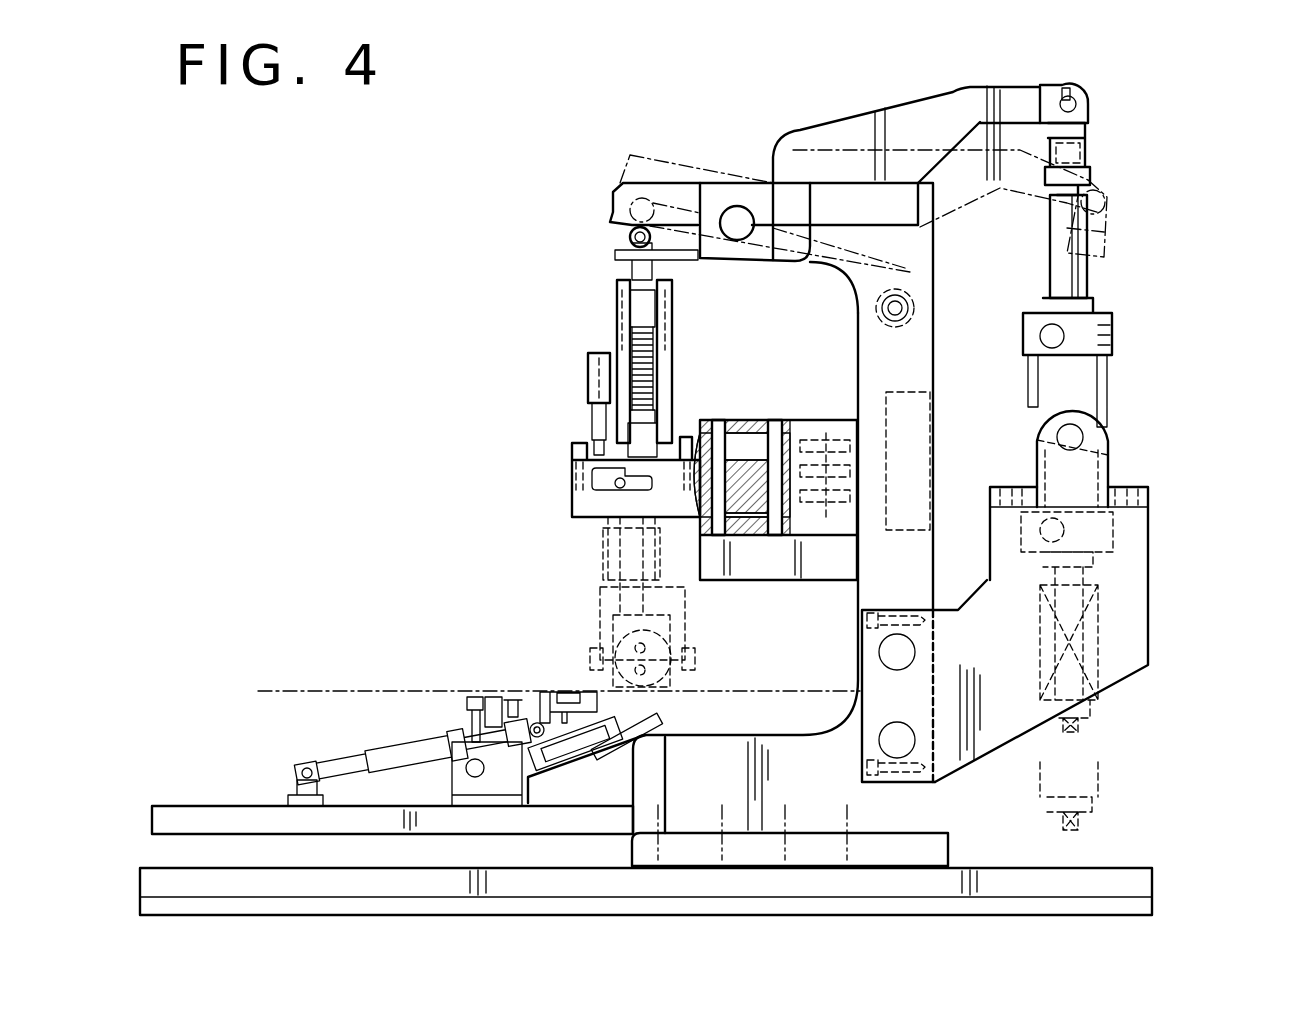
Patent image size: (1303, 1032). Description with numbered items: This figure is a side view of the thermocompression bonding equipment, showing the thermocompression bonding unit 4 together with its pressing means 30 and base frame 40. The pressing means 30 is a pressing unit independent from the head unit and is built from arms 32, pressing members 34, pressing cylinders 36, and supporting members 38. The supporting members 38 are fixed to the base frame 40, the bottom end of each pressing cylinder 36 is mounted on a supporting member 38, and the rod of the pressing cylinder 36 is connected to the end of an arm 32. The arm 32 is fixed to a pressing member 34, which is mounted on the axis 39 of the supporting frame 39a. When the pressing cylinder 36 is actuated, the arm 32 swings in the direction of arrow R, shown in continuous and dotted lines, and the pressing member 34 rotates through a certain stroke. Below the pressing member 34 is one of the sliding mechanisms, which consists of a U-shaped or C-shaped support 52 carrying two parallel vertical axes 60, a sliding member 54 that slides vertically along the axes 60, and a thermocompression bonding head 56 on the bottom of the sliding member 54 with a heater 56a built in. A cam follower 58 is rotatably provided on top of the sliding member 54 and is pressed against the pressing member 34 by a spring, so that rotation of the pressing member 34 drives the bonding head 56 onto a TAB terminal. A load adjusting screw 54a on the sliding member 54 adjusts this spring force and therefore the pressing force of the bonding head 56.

The thermocompression bonding unit 4 is at (492, 298).
The pressing means 30 is at (1138, 253).
The arm 32 is at (860, 128).
The pressing member 34 is at (582, 228).
The pressing cylinder 36 is at (1097, 333).
The supporting member 38 is at (1127, 568).
The axis 39 is at (743, 205).
The supporting frame 39a is at (920, 553).
The base frame 40 is at (922, 830).
The support 52 is at (827, 565).
The sliding member 54 is at (587, 507).
The load adjusting screw 54a is at (587, 387).
The thermocompression bonding head 56 is at (697, 665).
The heater 56a is at (640, 646).
The cam follower 58 is at (625, 233).
The axis 60 is at (712, 420).